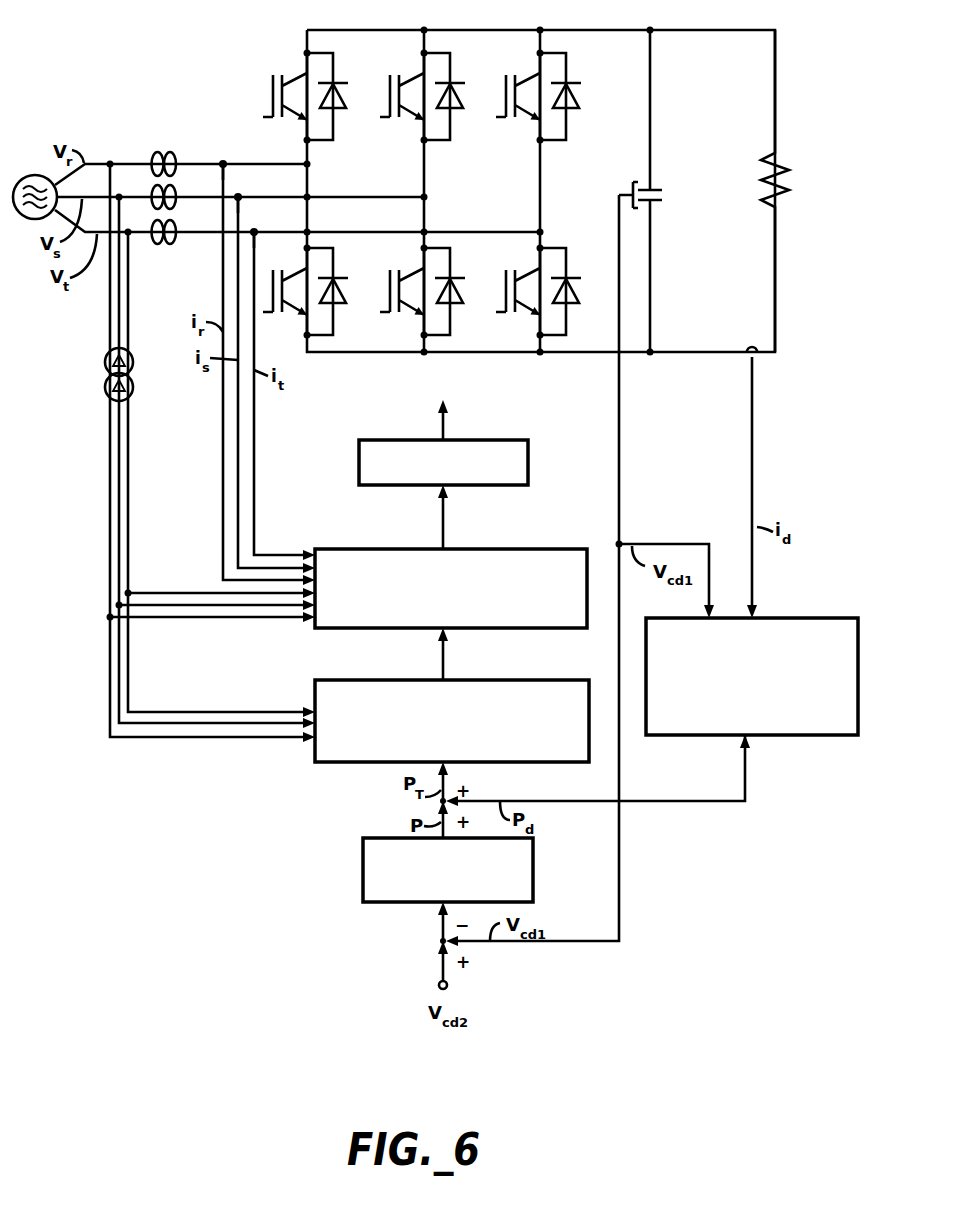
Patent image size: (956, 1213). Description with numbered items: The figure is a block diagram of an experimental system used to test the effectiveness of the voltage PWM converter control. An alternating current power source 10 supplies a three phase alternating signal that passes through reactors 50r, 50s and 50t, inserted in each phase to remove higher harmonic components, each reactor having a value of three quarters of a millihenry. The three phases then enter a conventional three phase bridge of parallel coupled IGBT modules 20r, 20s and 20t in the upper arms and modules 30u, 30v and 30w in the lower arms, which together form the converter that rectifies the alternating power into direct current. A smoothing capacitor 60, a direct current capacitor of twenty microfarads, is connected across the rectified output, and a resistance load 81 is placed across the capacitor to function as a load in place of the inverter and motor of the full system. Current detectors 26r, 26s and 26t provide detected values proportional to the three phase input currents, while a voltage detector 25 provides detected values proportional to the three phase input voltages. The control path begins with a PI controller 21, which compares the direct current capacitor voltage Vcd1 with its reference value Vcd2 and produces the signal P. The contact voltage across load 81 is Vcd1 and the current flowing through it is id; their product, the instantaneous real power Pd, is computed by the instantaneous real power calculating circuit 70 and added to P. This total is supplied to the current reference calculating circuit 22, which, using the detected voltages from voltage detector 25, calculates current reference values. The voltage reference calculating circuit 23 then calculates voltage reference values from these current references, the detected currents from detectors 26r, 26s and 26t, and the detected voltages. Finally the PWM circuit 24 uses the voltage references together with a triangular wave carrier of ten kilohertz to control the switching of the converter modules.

The alternating current power source 10 is at (25, 178).
The reactor 50r is at (164, 152).
The reactor 50s is at (177, 185).
The reactor 50t is at (180, 245).
The current detector 26r is at (225, 160).
The current detector 26s is at (240, 194).
The current detector 26t is at (255, 229).
The IGBT module 20r is at (289, 67).
The IGBT module 20s is at (407, 67).
The IGBT module 20t is at (524, 67).
The lower arm switching element (u) 30u is at (278, 328).
The lower arm switching element (v) 30v is at (410, 325).
The lower arm switching element (w) 30w is at (526, 325).
The voltage detector 25 is at (133, 395).
The PWM circuit 24 is at (485, 440).
The voltage reference calculating circuit 23 is at (358, 549).
The current reference calculating circuit 22 is at (350, 680).
The PI controller 21 is at (533, 865).
The instantaneous real power calculating circuit 70 is at (793, 618).
The smoothing capacitor 60 is at (656, 193).
The resistance load 81 is at (789, 167).